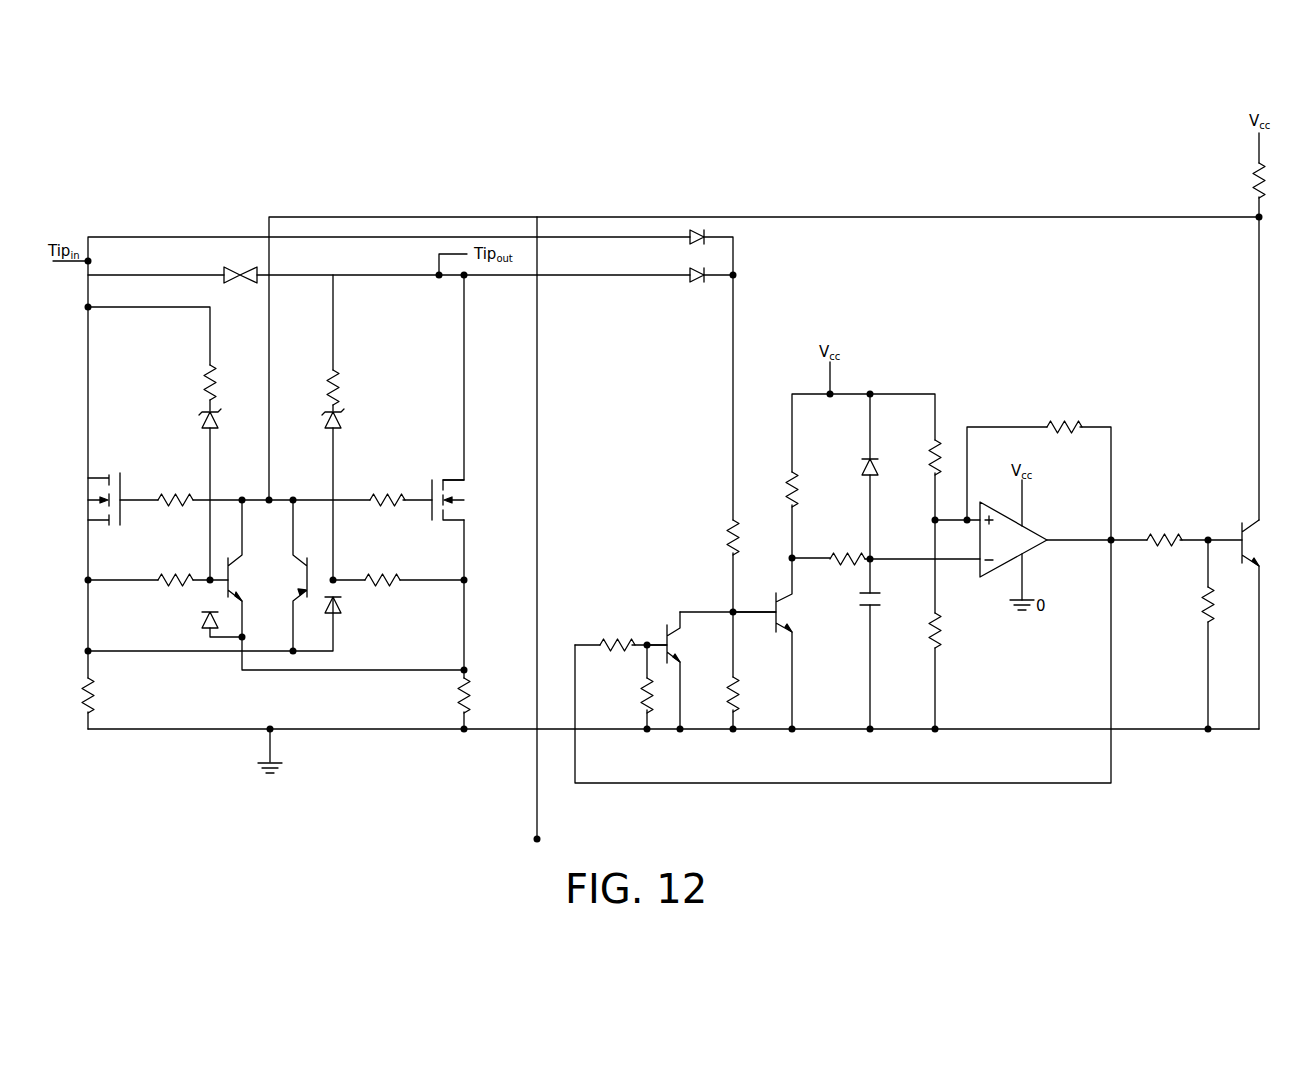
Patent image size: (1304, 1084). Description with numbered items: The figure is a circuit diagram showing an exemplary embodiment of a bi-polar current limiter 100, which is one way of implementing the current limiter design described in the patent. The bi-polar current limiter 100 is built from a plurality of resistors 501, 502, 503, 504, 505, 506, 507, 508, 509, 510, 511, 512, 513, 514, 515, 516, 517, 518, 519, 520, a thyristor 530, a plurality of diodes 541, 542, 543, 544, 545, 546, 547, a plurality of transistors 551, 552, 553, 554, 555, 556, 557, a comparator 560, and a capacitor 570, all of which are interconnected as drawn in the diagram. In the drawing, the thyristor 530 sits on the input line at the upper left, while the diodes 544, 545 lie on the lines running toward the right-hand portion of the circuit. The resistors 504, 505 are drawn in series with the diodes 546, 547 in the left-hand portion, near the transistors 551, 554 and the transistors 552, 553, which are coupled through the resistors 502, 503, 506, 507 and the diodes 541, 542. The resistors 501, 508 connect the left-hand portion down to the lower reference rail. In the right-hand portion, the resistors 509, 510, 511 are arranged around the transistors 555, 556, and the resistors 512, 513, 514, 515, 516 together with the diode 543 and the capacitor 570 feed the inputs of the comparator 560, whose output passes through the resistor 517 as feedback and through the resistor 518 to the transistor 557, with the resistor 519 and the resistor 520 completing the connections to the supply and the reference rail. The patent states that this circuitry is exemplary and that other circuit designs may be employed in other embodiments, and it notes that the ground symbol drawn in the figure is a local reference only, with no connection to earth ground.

The bi-polar current limiter 100 is at (922, 186).
The resistor 501 is at (100, 700).
The resistor 502 is at (177, 588).
The resistor 503 is at (177, 512).
The resistor 504 is at (216, 370).
The resistor 505 is at (340, 375).
The resistor 506 is at (375, 490).
The resistor 507 is at (400, 606).
The resistor 508 is at (478, 694).
The resistor 509 is at (600, 632).
The resistor 510 is at (630, 722).
The resistor 511 is at (742, 710).
The resistor 512 is at (720, 544).
The resistor 513 is at (783, 498).
The resistor 514 is at (850, 578).
The resistor 515 is at (947, 630).
The resistor 516 is at (944, 449).
The resistor 517 is at (1050, 418).
The resistor 518 is at (1150, 531).
The resistor 519 is at (1200, 609).
The resistor 520 is at (1246, 191).
The thyristor 530 is at (243, 283).
The diode 541 is at (203, 640).
The diode 542 is at (348, 608).
The diode 543 is at (884, 468).
The diode 544 is at (697, 288).
The diode 545 is at (698, 228).
The diode 546 is at (225, 424).
The diode 547 is at (345, 424).
The transistor 551 is at (130, 484).
The transistor 552 is at (252, 583).
The transistor 553 is at (312, 566).
The transistor 554 is at (472, 497).
The transistor 555 is at (684, 642).
The transistor 556 is at (798, 622).
The transistor 557 is at (1237, 530).
The comparator 560 is at (1062, 563).
The capacitor 570 is at (884, 600).